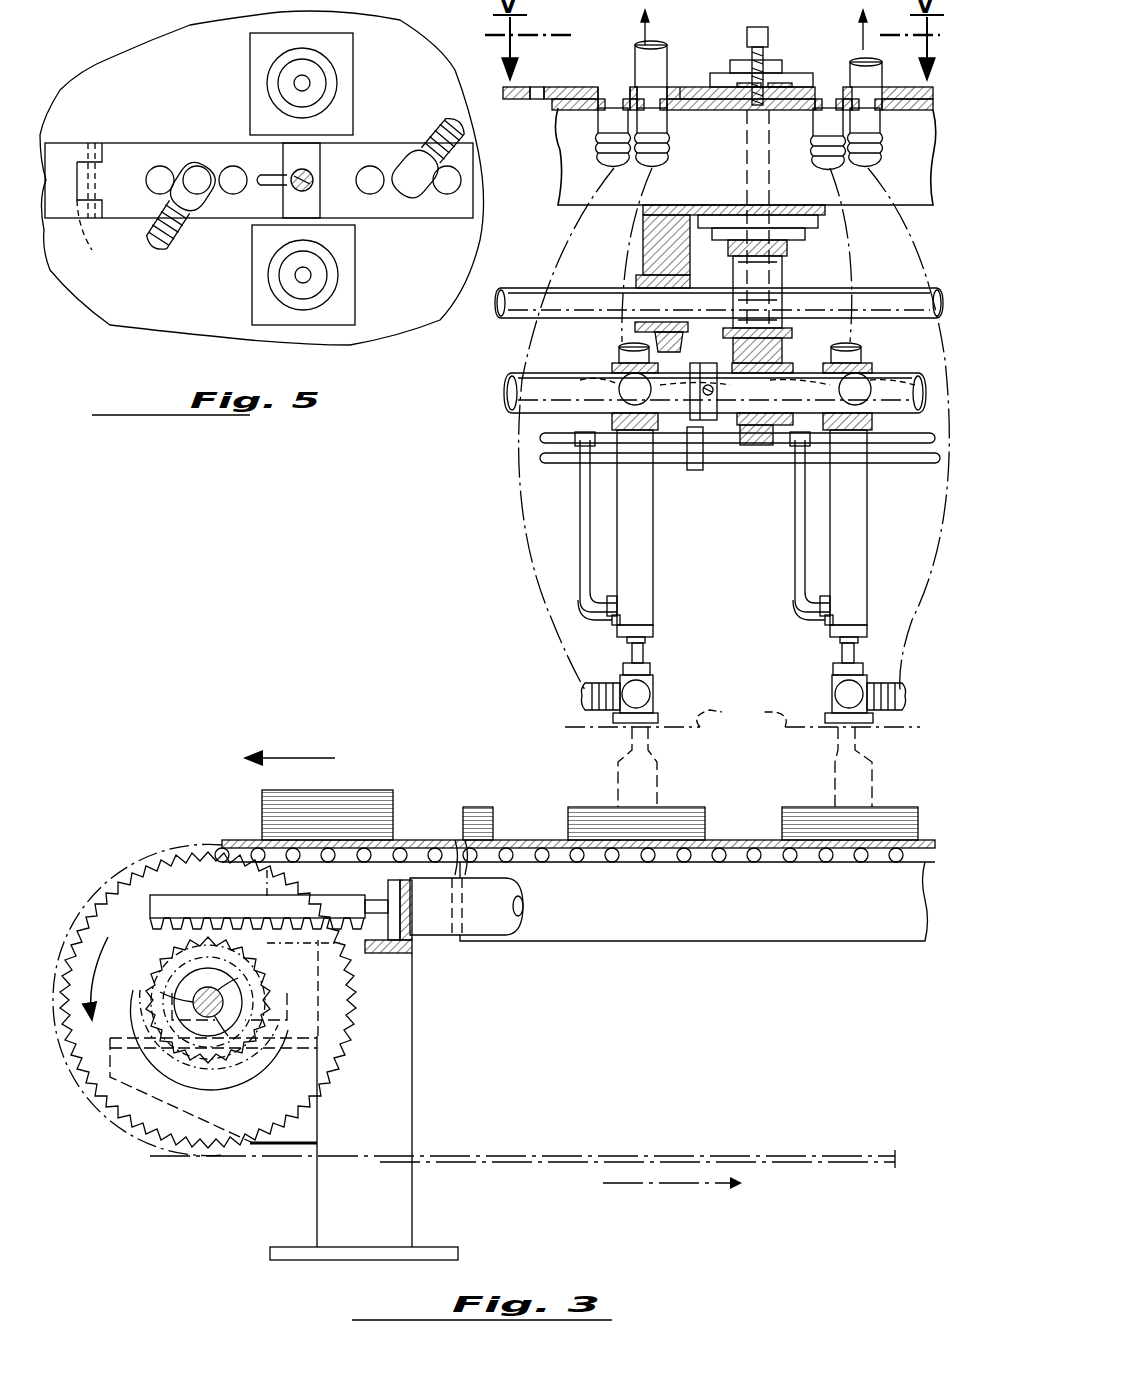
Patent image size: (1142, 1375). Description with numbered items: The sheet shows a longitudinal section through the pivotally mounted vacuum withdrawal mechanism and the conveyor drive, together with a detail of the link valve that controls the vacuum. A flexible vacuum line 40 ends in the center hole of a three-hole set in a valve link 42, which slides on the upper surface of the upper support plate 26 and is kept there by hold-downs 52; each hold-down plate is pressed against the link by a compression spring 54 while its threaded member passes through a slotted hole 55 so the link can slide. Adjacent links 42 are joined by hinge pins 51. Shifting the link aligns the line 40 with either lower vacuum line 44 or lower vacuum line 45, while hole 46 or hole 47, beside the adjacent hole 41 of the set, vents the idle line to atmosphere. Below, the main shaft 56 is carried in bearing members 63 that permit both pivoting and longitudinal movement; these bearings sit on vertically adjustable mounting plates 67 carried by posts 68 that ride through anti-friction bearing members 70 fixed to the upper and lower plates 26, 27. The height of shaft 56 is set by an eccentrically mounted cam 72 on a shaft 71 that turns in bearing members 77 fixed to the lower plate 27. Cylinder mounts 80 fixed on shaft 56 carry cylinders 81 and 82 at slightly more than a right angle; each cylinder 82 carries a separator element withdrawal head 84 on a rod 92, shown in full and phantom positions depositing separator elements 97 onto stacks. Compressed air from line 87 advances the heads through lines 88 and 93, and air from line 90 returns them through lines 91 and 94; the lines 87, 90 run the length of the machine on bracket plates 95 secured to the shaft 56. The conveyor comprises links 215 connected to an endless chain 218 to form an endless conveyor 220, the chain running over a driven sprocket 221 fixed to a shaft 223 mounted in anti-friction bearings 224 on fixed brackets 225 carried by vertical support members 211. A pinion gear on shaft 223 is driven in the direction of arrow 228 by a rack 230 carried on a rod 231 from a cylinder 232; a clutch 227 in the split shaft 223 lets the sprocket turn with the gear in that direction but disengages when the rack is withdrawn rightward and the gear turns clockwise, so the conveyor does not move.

In FIG. 5, the upper support plate 26 is at (140, 308).
In FIG. 3, the upper support plate 26 is at (800, 105).
In FIG. 3, the lower plate 27 is at (706, 205).
In FIG. 5, the vacuum line 40 is at (198, 165).
In FIG. 3, the vacuum line 40 is at (643, 52).
In FIG. 5, the plunger hole 41 is at (420, 195).
In FIG. 3, the plunger hole 41 is at (663, 87).
In FIG. 5, the valve link 42 is at (125, 143).
In FIG. 3, the valve link 42 is at (574, 87).
In FIG. 5, the lower vacuum line 44 is at (80, 125).
In FIG. 3, the lower vacuum line 44 is at (660, 120).
In FIG. 3, the lower vacuum line 45 is at (610, 122).
In FIG. 5, the hole 46 is at (165, 166).
In FIG. 3, the hole 46 is at (606, 87).
In FIG. 5, the hole 47 is at (234, 165).
In FIG. 3, the hole 47 is at (686, 88).
In FIG. 5, the hinge pins 51 is at (97, 208).
In FIG. 3, the hinge pins 51 is at (545, 90).
In FIG. 5, the hold-down 52 is at (310, 155).
In FIG. 3, the hold-down 52 is at (738, 82).
In FIG. 3, the compression spring 54 is at (760, 60).
In FIG. 5, the slotted hole 55 is at (262, 190).
In FIG. 3, the main shaft 56 is at (510, 400).
In FIG. 3, the bearing members 63 is at (754, 445).
In FIG. 3, the mounting plate 67 is at (790, 328).
In FIG. 5, the posts 68 is at (296, 82).
In FIG. 3, the posts 68 is at (747, 30).
In FIG. 5, the anti-friction bearing members 70 is at (332, 68).
In FIG. 3, the anti-friction bearing members 70 is at (800, 235).
In FIG. 3, the shaft 71 is at (520, 300).
In FIG. 3, the eccentrically mounted cam 72 is at (736, 284).
In FIG. 3, the bearing members 77 is at (662, 248).
In FIG. 3, the cylinder mounts 80 is at (870, 364).
In FIG. 3, the cylinder 81 is at (860, 392).
In FIG. 3, the cylinder 82 is at (862, 540).
In FIG. 3, the separator element withdrawal head 84 is at (655, 700).
In FIG. 3, the air line 87 is at (898, 445).
In FIG. 3, the line 88 is at (790, 395).
In FIG. 3, the air line 90 is at (922, 466).
In FIG. 3, the line 91 is at (747, 389).
In FIG. 3, the rods 92 is at (842, 652).
In FIG. 3, the line 93 is at (808, 478).
In FIG. 3, the return delivery line 94 is at (795, 560).
In FIG. 3, the bracket plates 95 is at (702, 365).
In FIG. 3, the separator elements 97 is at (742, 717).
In FIG. 3, the vertical support members 211 is at (397, 1127).
In FIG. 3, the conveyor links 215 is at (408, 840).
In FIG. 3, the endless chain 218 is at (594, 856).
In FIG. 3, the endless conveyor 220 is at (560, 1156).
In FIG. 3, the driven sprocket 221 is at (342, 1025).
In FIG. 3, the shaft 223 is at (222, 1012).
In FIG. 3, the anti-friction bearings 224 is at (355, 1045).
In FIG. 3, the fixed brackets 225 is at (272, 960).
In FIG. 3, the clutch 227 is at (188, 1023).
In FIG. 3, the arrow 228 is at (100, 905).
In FIG. 3, the rack 230 is at (183, 895).
In FIG. 3, the rod 231 is at (386, 905).
In FIG. 3, the cylinder 232 is at (510, 930).